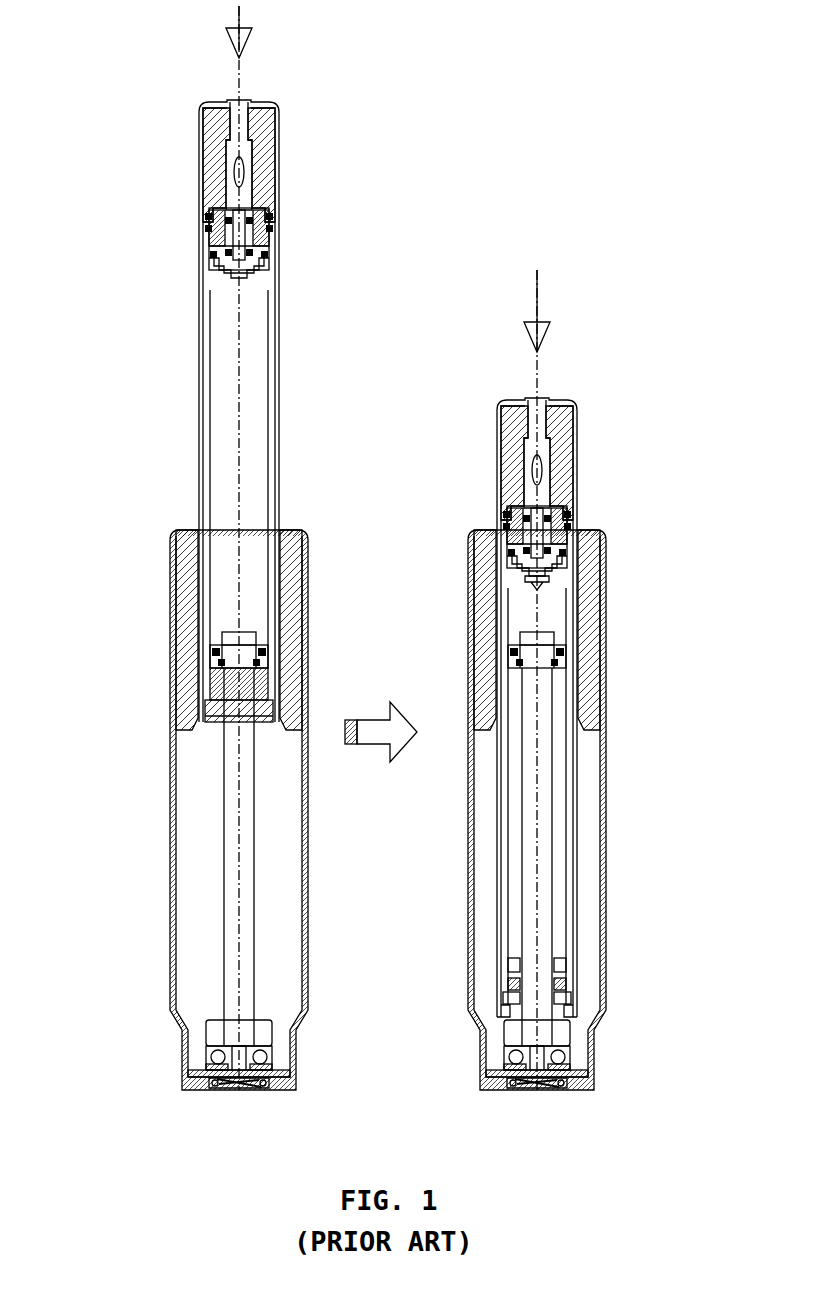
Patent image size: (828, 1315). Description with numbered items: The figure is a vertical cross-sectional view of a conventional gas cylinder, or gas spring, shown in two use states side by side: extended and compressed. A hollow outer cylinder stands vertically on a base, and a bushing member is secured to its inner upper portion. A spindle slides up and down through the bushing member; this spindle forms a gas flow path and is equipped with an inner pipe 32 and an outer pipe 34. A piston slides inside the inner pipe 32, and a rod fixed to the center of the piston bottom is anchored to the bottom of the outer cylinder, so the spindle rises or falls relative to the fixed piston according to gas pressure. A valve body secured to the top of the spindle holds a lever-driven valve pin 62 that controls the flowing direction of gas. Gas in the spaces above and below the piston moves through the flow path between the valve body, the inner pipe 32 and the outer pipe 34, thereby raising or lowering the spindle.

The inner pipe 32 is at (566, 829).
The outer pipe 34 is at (577, 787).
The valve pin 62 is at (549, 579).